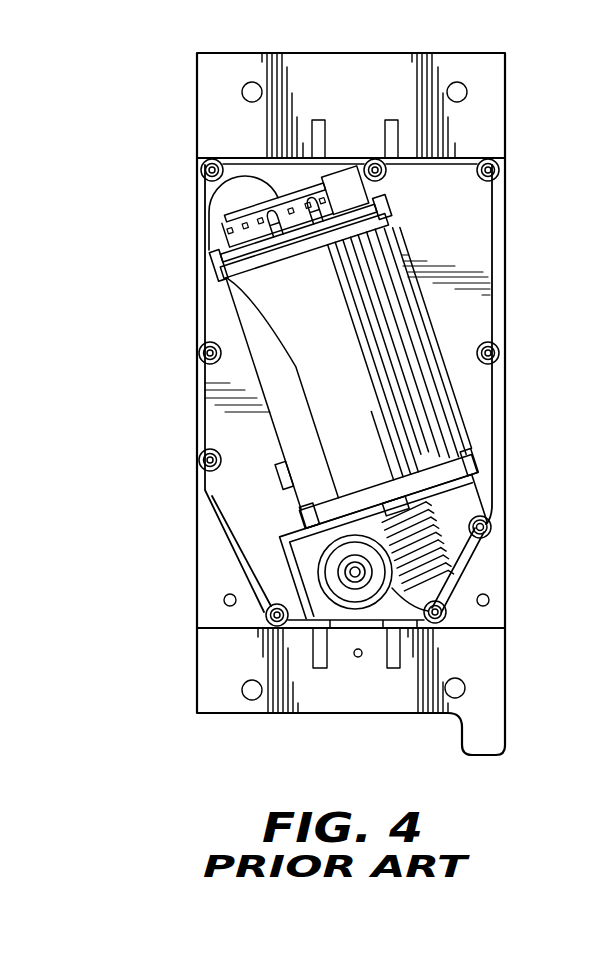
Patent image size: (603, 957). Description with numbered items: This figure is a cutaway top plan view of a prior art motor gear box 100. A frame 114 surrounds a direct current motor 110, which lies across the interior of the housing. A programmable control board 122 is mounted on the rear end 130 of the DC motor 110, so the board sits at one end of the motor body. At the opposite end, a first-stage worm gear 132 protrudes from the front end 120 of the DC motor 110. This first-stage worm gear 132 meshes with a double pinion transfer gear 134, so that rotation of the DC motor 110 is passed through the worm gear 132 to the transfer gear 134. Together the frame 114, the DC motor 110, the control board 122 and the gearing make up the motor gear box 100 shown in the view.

The prior art motor gear box 100 is at (194, 206).
The direct current (DC) motor 110 is at (395, 478).
The frame 114 is at (197, 272).
The front end 120 is at (322, 515).
The programmable control board (PCB) 122 is at (262, 176).
The rear end 130 is at (391, 222).
The first-stage worm gear 132 is at (450, 550).
The double pinion transfer gear 134 is at (423, 620).